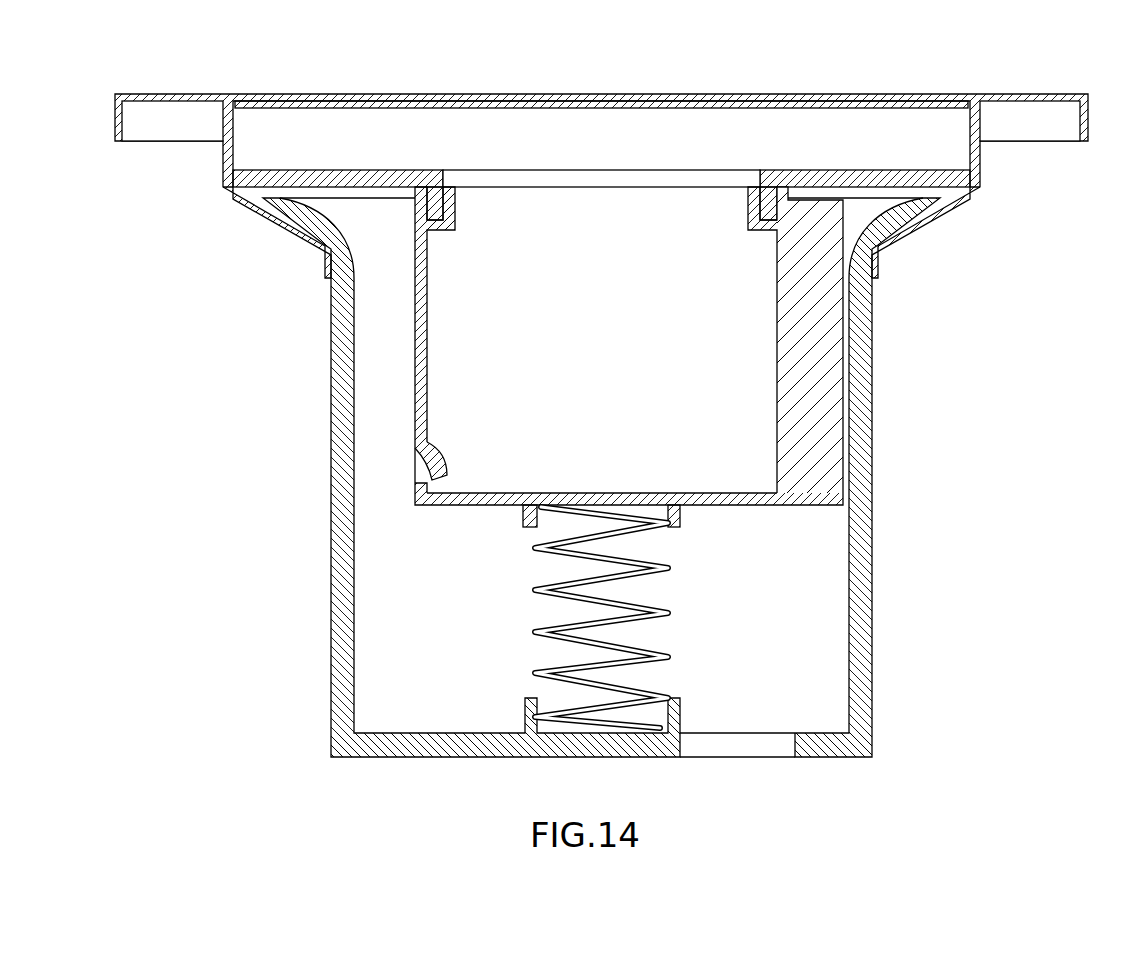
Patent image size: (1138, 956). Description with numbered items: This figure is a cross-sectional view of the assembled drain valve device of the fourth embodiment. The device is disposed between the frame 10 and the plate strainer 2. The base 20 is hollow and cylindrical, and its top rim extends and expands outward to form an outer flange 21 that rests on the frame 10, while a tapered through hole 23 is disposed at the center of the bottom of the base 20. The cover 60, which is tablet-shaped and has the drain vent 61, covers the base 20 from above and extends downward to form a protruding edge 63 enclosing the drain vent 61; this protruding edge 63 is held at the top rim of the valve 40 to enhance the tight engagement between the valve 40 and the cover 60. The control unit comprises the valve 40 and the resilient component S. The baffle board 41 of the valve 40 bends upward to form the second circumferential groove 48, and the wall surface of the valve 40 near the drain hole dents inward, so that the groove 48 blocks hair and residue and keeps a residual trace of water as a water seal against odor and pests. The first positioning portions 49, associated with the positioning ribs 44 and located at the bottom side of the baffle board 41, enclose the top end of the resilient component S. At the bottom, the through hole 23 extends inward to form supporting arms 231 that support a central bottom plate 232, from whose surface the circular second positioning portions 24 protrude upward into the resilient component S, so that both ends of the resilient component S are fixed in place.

The plate strainer 2 is at (722, 105).
The frame 10 is at (1042, 100).
The base 20 is at (329, 294).
The outer flange 21 is at (300, 213).
The through hole 23 is at (777, 748).
The second positioning portions 24 is at (677, 717).
The valve 40 is at (418, 343).
The baffle board 41 is at (687, 502).
The positioning ribs 44 is at (808, 340).
The second circumferential groove 48 is at (427, 490).
The first positioning portions 49 is at (677, 517).
The cover 60 is at (877, 178).
The drain vent 61 is at (450, 173).
The protruding edge 63 is at (433, 204).
The supporting arms 231 is at (397, 750).
The central bottom plate 232 is at (655, 750).
The resilient component S is at (670, 613).